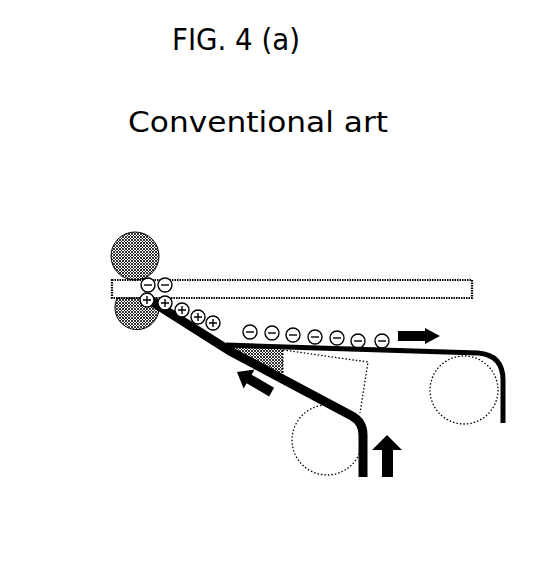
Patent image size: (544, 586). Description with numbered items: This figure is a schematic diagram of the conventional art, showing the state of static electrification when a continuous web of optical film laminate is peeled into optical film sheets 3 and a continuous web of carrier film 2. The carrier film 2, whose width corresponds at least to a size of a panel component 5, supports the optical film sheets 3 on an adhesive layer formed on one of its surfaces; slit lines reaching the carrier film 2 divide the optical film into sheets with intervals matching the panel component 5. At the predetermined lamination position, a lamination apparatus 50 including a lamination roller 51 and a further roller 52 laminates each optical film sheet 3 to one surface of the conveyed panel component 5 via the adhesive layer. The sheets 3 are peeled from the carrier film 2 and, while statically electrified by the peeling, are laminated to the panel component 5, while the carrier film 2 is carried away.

The lamination apparatus 50 is at (222, 284).
The lamination roller 51 is at (162, 257).
The lamination roller 52 is at (137, 332).
The panel component 5 is at (452, 278).
The optical film sheet 3 is at (197, 333).
The carrier film 2 is at (415, 357).